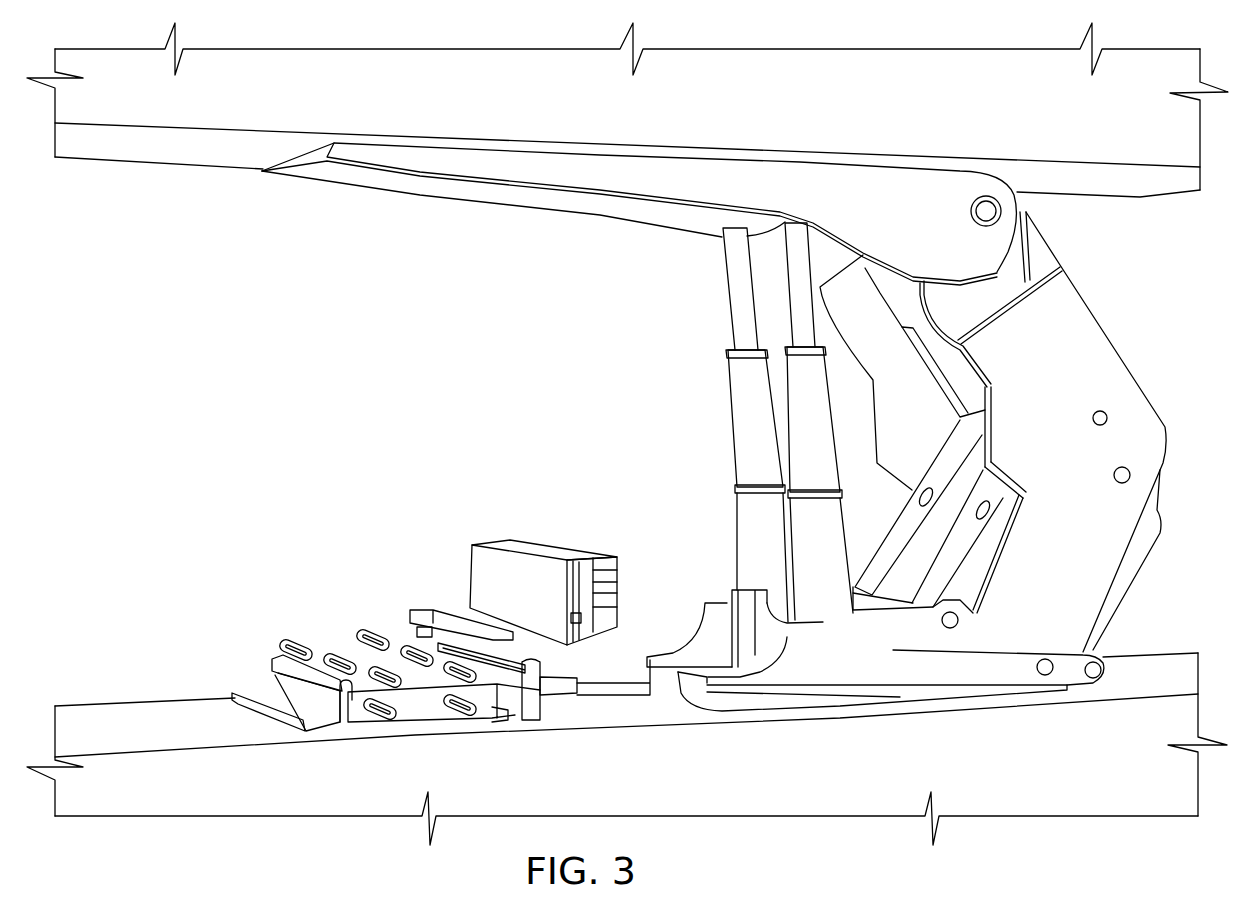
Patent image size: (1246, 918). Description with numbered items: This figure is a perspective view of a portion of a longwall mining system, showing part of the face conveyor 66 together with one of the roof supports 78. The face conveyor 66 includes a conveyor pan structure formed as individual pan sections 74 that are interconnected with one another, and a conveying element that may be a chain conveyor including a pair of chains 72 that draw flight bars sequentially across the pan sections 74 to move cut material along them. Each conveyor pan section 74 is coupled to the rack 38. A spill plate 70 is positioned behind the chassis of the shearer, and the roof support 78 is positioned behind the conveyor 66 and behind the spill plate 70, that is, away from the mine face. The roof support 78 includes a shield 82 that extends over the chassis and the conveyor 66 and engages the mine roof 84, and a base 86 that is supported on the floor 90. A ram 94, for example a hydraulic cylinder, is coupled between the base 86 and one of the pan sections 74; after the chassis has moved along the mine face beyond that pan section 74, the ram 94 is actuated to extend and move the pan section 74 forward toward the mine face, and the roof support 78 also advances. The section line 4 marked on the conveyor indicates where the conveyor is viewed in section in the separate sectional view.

The mine roof 84 is at (128, 150).
The shield 82 is at (444, 185).
The roof support 78 is at (683, 383).
The ram 94 is at (623, 668).
The base 86 is at (893, 650).
The floor 90 is at (105, 727).
The face conveyor 66 is at (282, 597).
The pan section 74 is at (255, 680).
The chains 72 is at (362, 640).
The rack 38 is at (416, 642).
The spill plate 70 is at (513, 570).
The section line 4- 4 is at (292, 683).